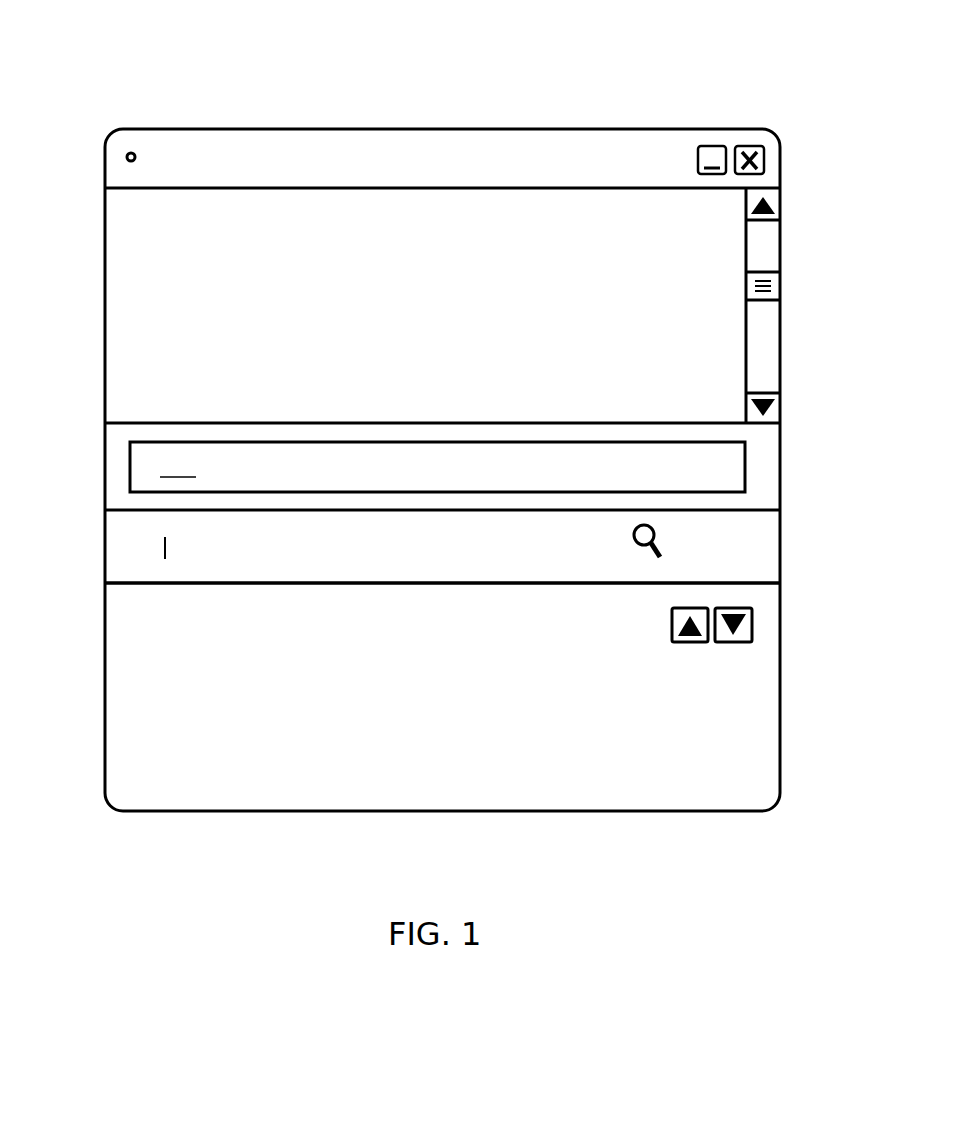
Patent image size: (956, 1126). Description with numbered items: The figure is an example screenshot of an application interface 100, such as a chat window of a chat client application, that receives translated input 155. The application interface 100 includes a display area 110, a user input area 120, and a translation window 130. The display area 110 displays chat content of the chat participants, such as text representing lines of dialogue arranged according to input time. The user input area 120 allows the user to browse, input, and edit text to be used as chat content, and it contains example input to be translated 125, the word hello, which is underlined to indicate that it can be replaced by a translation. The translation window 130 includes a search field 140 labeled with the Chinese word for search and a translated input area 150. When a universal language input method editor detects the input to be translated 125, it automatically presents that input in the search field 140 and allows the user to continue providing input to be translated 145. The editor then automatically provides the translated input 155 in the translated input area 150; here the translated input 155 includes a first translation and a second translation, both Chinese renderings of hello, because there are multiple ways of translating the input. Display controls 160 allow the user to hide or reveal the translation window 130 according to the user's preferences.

The application interface 100 is at (99, 50).
The display area 110 is at (128, 271).
The user input area 120 is at (724, 466).
The input to be translated 125 is at (155, 462).
The translation window 130 is at (797, 508).
The search field 140 is at (449, 566).
The input to be translated 145 is at (120, 542).
The translated input area 150 is at (452, 785).
The translated input 155 is at (322, 656).
The display controls 160 is at (750, 650).